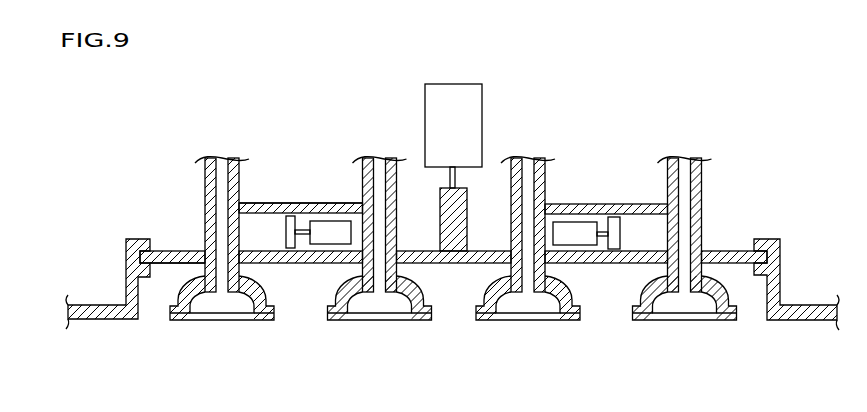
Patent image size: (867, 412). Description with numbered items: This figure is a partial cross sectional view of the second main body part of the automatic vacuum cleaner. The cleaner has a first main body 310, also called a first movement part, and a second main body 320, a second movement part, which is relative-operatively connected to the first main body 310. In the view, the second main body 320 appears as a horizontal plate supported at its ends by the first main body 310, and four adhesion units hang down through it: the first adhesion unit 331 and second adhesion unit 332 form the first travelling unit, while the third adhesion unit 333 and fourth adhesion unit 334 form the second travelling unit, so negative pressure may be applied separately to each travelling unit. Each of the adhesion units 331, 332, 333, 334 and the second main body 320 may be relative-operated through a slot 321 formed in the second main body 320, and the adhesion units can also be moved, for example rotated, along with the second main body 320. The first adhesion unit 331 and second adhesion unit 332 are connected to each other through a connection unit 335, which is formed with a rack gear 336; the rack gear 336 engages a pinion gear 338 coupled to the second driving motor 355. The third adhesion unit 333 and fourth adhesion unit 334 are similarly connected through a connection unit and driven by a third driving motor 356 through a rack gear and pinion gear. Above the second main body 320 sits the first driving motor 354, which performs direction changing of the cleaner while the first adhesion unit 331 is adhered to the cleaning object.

The first main body 310 is at (93, 313).
The second main body 320 is at (165, 250).
The slot 321 is at (177, 263).
The first adhesion unit 331 is at (260, 293).
The second adhesion unit 332 is at (422, 295).
The third adhesion unit 333 is at (557, 303).
The fourth adhesion unit 334 is at (640, 318).
The connection unit 335 is at (310, 206).
The rack gear 336 is at (272, 206).
The pinion gear 338 is at (291, 248).
The first driving motor 354 is at (427, 98).
The second driving motor 355 is at (337, 230).
The third driving motor 356 is at (577, 227).